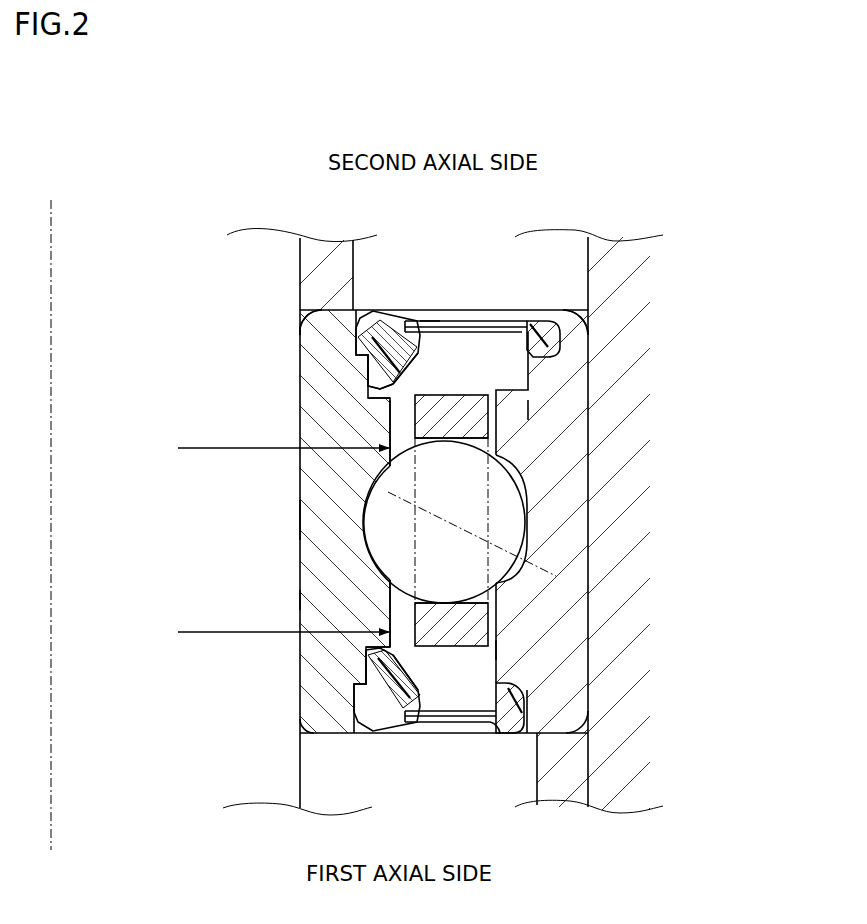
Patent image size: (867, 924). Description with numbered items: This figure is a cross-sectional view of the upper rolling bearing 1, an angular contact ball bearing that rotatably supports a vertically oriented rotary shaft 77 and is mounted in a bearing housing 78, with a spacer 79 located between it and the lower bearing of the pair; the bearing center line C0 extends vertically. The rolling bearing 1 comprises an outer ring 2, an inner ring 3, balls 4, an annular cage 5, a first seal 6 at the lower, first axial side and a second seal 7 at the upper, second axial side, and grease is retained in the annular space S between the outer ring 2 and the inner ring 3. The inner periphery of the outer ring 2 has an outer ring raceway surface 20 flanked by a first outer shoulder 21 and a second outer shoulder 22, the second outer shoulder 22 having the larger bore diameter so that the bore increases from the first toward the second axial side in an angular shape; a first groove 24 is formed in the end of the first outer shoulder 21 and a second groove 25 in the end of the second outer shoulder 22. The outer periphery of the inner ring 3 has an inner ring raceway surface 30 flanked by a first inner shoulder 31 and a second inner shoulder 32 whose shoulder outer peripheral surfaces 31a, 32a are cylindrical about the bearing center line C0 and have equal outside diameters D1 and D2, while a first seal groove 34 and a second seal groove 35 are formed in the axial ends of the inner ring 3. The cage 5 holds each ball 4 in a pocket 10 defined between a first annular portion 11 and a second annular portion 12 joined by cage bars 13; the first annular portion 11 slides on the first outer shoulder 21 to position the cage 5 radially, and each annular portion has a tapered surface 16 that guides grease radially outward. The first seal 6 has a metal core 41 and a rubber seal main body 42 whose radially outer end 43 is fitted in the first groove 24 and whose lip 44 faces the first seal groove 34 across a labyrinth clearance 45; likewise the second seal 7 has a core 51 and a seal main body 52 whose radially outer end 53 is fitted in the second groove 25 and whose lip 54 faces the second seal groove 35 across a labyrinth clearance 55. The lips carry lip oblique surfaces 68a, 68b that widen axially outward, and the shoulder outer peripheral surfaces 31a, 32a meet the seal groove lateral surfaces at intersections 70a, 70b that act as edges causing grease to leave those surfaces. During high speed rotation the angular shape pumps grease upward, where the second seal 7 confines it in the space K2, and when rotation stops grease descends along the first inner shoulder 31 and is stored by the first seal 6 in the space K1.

The rolling bearing 1 is at (590, 497).
The outer ring 2 is at (578, 455).
The inner ring 3 is at (345, 475).
The ball 4 is at (350, 512).
The cage 5 is at (388, 598).
The first seal 6 is at (465, 730).
The second seal 7 is at (465, 320).
The pocket 10 is at (460, 598).
The first annular portion 11 is at (437, 600).
The second annular portion 12 is at (468, 447).
The cage bar 13 is at (520, 525).
The tapered surface 16 is at (420, 393).
The outer ring raceway surface 20 is at (505, 593).
The first outer shoulder 21 is at (515, 650).
The second outer shoulder 22 is at (540, 418).
The first groove 24 is at (513, 732).
The second groove 25 is at (548, 325).
The inner ring raceway surface 30 is at (372, 480).
The first inner shoulder 31 is at (385, 585).
The shoulder outer peripheral surface 31a is at (378, 570).
The second inner shoulder 32 is at (390, 432).
The shoulder outer peripheral surface 32a is at (390, 404).
The first seal groove 34 is at (298, 727).
The second seal groove 35 is at (325, 347).
The core 41 is at (430, 717).
The seal main body 42 is at (390, 727).
The radially outer end 43 is at (530, 698).
The lip 44 is at (400, 662).
The labyrinth clearance 45 is at (370, 727).
The core 51 is at (432, 320).
The seal main body 52 is at (378, 310).
The radially outer end 53 is at (600, 338).
The lip 54 is at (368, 366).
The labyrinth clearance 55 is at (378, 308).
The lip oblique surface 68a is at (415, 733).
The lip oblique surface 68b is at (408, 318).
The intersection 70a is at (358, 686).
The intersection 70b is at (420, 330).
The rotary shaft 77 is at (318, 265).
The bearing housing 78 is at (624, 250).
The spacer 79 is at (562, 788).
The bearing center line C0 is at (55, 266).
The outside diameter D1 is at (284, 622).
The outside diameter D2 is at (284, 438).
The space K1 is at (473, 698).
The space K2 is at (509, 377).
The annular space S is at (485, 322).